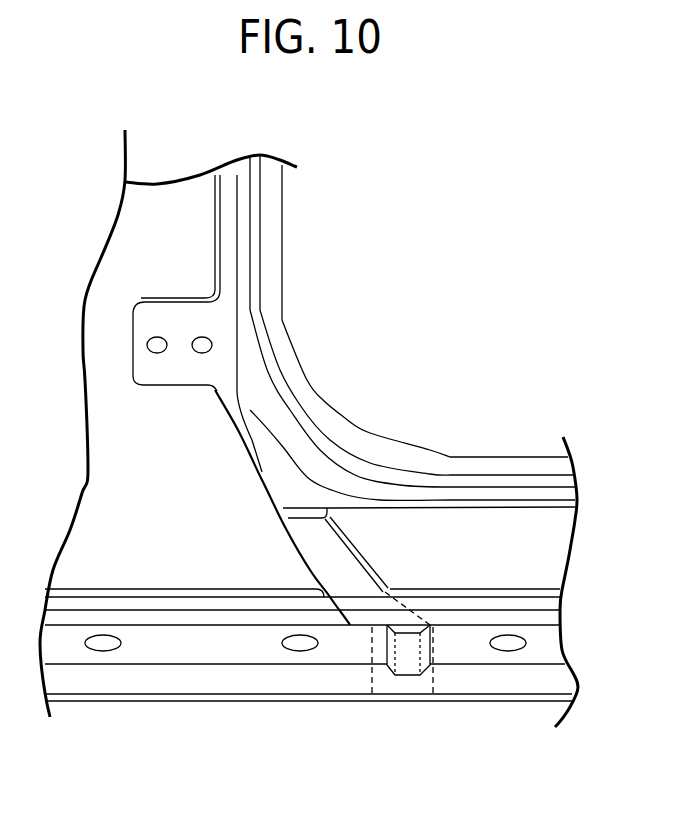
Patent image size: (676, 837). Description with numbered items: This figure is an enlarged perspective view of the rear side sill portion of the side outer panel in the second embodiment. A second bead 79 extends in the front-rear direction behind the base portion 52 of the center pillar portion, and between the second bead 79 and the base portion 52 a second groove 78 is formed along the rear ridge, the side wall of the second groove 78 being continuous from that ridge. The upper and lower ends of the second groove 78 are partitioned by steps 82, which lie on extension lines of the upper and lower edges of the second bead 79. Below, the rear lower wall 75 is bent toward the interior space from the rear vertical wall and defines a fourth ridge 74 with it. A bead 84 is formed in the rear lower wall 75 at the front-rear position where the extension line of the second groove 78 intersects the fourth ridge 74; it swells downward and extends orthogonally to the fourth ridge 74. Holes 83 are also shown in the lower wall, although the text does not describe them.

The base portion 52 is at (227, 453).
The second bead 79 is at (507, 507).
The second groove 78 is at (353, 560).
The step 82 is at (290, 527).
The fourth ridge 74 is at (480, 618).
The rear lower wall 75 is at (467, 653).
The hole 83 is at (303, 651).
The bead 84 is at (410, 672).